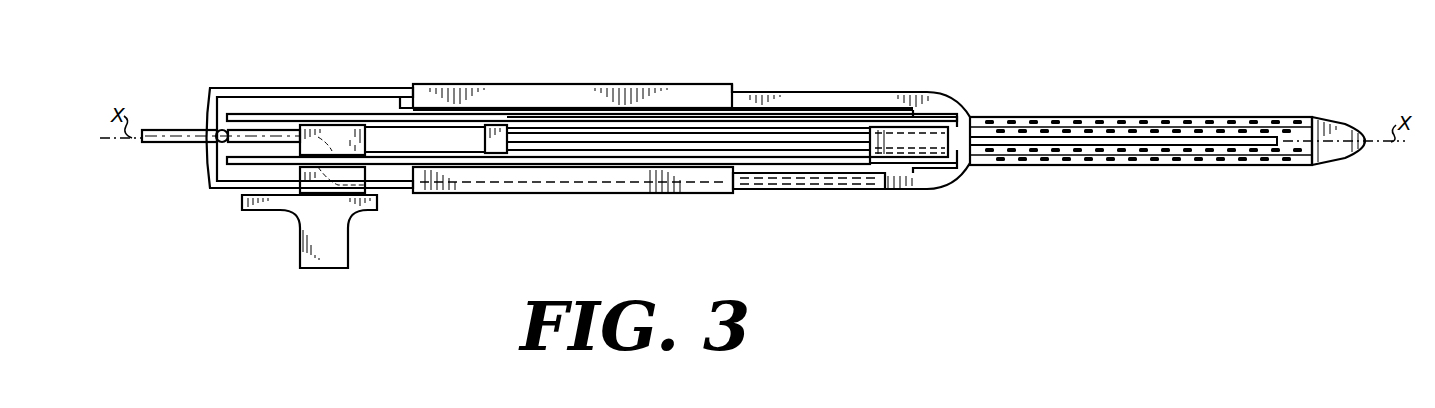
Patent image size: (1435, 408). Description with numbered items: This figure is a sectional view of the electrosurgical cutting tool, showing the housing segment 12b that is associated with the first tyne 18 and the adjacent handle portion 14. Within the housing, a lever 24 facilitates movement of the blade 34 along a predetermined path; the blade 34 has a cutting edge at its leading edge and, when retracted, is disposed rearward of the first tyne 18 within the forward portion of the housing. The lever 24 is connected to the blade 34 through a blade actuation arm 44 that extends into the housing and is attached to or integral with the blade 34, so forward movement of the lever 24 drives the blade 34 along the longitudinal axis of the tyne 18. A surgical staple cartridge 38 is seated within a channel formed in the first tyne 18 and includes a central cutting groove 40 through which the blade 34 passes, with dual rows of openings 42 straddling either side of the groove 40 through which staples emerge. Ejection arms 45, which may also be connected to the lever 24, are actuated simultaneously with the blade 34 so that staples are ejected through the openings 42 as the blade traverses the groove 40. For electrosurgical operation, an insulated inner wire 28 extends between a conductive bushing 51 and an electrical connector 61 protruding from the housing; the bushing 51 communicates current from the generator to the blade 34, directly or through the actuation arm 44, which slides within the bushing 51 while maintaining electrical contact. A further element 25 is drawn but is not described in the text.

The housing segment 12b is at (255, 78).
The electrical connector 61 is at (165, 143).
The piston block 25 is at (341, 141).
The lever 24 is at (338, 250).
The handle portion 14 is at (673, 84).
The blade actuation arm 44 is at (563, 140).
The ejection arms 45 is at (806, 128).
The inner wire 28 is at (648, 193).
The conductive bushing 51 is at (888, 160).
The blade 34 is at (947, 150).
The first tyne 18 is at (1208, 182).
The openings 42 is at (1060, 121).
The central cutting groove 40 is at (1212, 140).
The surgical staple cartridge 38 is at (1300, 149).